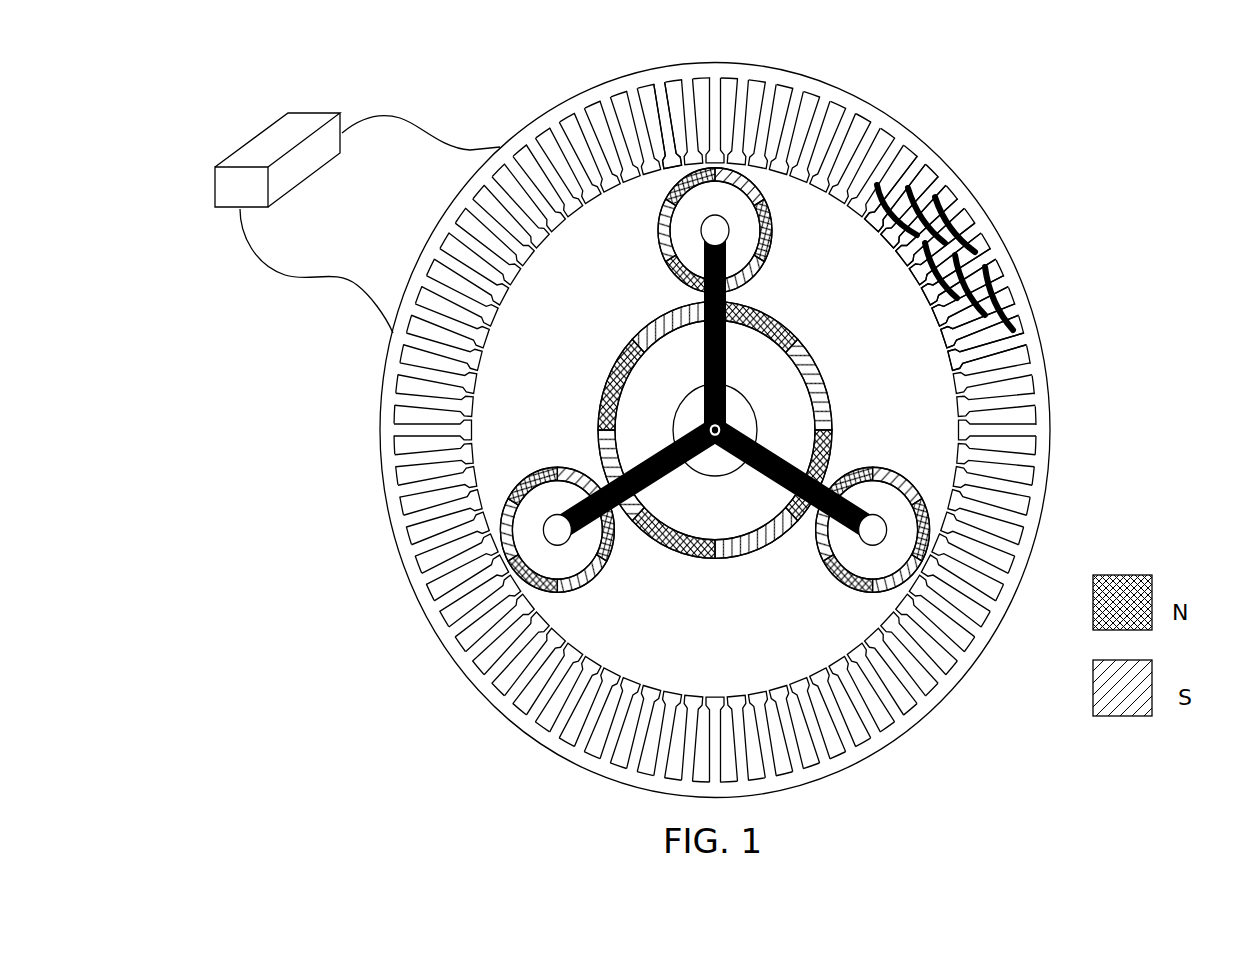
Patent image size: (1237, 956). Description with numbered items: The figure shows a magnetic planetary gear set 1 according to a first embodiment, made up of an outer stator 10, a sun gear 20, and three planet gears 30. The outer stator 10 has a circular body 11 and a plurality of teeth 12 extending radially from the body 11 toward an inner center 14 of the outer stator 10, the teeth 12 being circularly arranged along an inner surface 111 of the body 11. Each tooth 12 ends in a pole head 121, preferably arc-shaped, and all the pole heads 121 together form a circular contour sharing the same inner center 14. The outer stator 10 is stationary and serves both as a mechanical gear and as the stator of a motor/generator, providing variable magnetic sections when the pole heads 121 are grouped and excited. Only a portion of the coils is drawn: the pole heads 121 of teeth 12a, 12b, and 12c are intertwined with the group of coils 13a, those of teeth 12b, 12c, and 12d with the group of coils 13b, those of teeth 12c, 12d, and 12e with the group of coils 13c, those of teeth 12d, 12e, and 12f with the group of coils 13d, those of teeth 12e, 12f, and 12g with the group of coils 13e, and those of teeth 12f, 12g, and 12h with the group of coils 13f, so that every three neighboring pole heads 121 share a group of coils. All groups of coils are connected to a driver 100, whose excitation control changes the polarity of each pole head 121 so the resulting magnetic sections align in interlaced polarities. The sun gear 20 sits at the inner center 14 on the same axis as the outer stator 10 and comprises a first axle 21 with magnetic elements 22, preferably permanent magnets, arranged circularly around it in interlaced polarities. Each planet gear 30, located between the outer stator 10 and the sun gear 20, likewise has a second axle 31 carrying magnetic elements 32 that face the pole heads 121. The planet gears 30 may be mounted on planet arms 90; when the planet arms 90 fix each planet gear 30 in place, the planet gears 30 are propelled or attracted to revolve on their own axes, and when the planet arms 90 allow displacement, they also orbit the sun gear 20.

The magnetic planetary gear set 1 is at (1100, 130).
The outer stator 10 is at (418, 233).
The circular body 11 is at (870, 110).
The inner surface 111 is at (838, 97).
The teeth 12 is at (675, 88).
The pole head 121 is at (676, 157).
The tooth 12a is at (923, 153).
The tooth 12b is at (943, 178).
The tooth 12c is at (960, 193).
The tooth 12d is at (967, 220).
The tooth 12e is at (987, 247).
The tooth 12f is at (1000, 270).
The tooth 12g is at (1010, 297).
The tooth 12h is at (1023, 320).
The group of coils 13a is at (893, 226).
The group of coils 13b is at (900, 258).
The group of coils 13c is at (977, 200).
The group of coils 13d is at (922, 283).
The group of coils 13e is at (946, 325).
The group of coils 13f is at (951, 340).
The inner center 14 is at (706, 421).
The sun gear 20 is at (725, 443).
The first axle 21 is at (718, 463).
The magnetic elements 22 is at (810, 523).
The planet gears 30 is at (567, 519).
The second axle 31 is at (560, 552).
The magnetic elements 32 is at (613, 548).
The planet arms 90 is at (762, 417).
The driver 100 is at (270, 145).